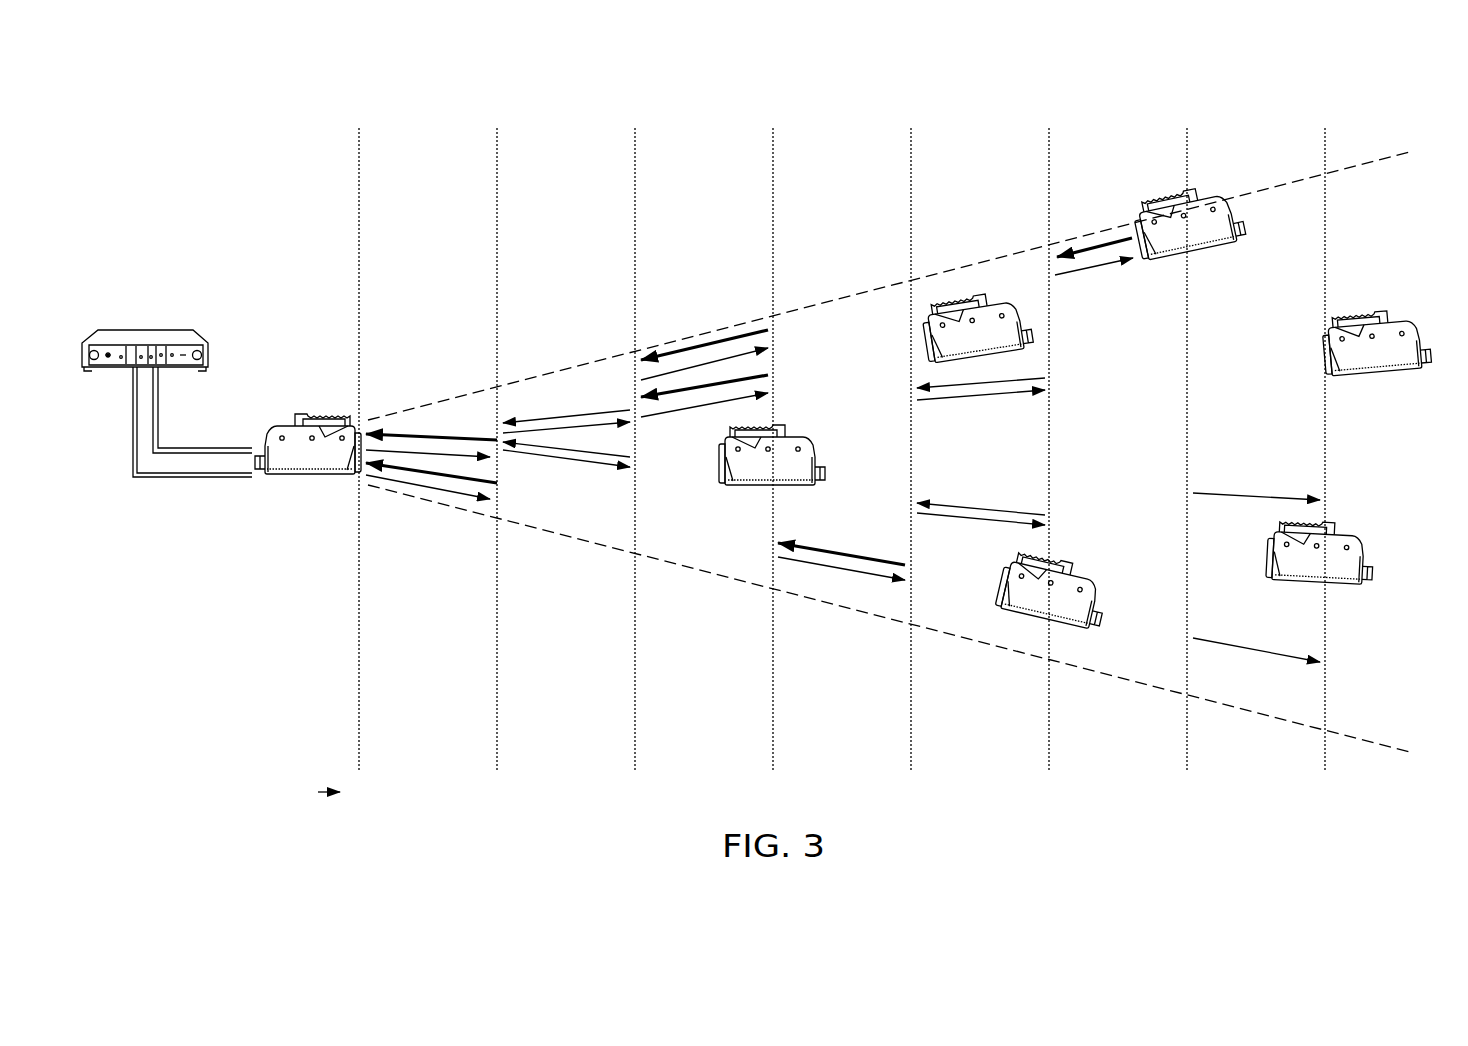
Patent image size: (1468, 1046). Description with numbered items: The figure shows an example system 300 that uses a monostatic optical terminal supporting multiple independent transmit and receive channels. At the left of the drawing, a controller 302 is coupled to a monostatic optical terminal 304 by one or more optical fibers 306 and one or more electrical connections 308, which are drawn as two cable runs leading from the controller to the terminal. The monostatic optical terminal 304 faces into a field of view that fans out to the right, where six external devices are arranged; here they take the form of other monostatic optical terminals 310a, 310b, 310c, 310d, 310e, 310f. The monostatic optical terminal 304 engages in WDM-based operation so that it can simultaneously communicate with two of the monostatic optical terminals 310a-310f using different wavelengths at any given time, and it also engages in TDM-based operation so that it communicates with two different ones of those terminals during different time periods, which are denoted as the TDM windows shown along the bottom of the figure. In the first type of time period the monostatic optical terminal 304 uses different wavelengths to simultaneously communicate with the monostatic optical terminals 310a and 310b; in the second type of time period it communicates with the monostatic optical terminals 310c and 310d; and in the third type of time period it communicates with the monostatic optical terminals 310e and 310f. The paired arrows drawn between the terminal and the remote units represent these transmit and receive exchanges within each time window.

The system 300 is at (302, 122).
The controller 302 is at (146, 330).
The monostatic optical terminal 304 is at (298, 414).
The optical fibers 306 is at (196, 478).
The electrical connections 308 is at (218, 450).
The monostatic optical terminal 310a is at (1080, 580).
The monostatic optical terminal 310b is at (797, 437).
The monostatic optical terminal 310c is at (1305, 583).
The monostatic optical terminal 310d is at (1385, 315).
The monostatic optical terminal 310e is at (980, 297).
The monostatic optical terminal 310f is at (1167, 190).